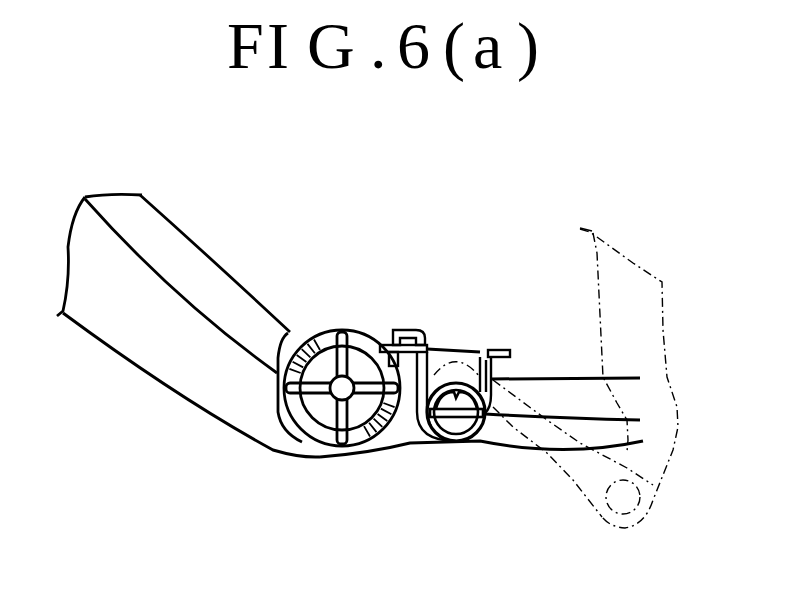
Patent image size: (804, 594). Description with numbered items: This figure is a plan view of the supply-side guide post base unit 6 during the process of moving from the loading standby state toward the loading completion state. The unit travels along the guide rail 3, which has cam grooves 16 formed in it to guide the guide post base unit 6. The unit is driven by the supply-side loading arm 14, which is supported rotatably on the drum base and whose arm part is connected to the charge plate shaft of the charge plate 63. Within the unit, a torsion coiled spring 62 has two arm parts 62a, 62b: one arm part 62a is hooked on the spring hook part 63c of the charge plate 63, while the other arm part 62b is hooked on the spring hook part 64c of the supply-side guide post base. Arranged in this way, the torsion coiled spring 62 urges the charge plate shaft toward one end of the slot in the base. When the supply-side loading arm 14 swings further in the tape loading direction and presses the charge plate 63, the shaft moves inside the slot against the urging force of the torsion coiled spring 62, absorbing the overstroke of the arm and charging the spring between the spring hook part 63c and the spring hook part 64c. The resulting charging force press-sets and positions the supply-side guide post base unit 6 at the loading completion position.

The guide rail 3 is at (192, 377).
The supply-side guide post base unit 6 is at (407, 433).
The supply-side loading arm 14 is at (650, 335).
The cam grooves 16 is at (192, 283).
The torsion coiled spring 62 is at (460, 441).
The arm part 62a is at (500, 350).
The arm part 62b is at (404, 330).
The charge plate 63 is at (445, 352).
The spring hook part 63c is at (497, 367).
The spring hook part 64c is at (397, 347).